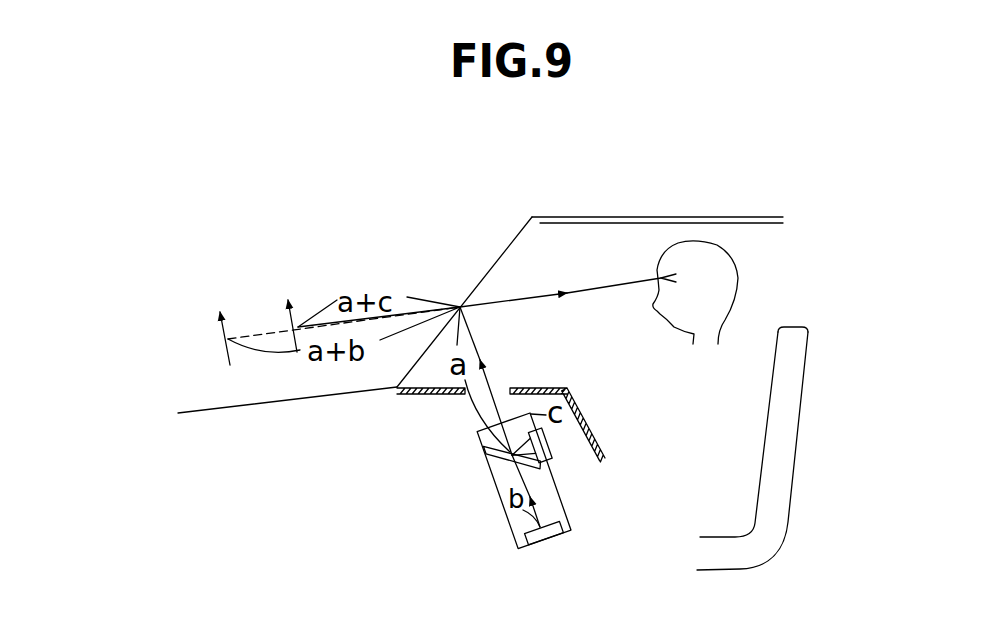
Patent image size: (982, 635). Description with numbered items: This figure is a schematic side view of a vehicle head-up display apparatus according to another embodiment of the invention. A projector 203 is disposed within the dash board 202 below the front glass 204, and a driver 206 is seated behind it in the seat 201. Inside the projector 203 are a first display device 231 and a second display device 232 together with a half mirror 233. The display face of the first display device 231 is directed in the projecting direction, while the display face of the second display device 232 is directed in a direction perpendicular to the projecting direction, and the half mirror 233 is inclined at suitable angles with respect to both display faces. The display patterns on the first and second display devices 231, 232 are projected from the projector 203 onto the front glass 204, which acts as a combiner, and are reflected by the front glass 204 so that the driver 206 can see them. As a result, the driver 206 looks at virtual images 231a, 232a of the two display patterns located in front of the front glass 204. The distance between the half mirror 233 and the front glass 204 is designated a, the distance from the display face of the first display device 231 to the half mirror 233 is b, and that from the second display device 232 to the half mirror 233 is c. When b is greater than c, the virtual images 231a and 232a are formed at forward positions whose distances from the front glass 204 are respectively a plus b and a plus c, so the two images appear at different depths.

The driver seat 201 is at (800, 433).
The dash board 202 is at (587, 417).
The projector 203 is at (572, 507).
The front glass 204 is at (508, 245).
The driver 206 is at (740, 282).
The first display device 231 is at (550, 538).
The virtual image of the first display device 231a is at (228, 337).
The second display device 232 is at (550, 443).
The virtual image of the second display device 232a is at (295, 330).
The half mirror 233 is at (485, 470).